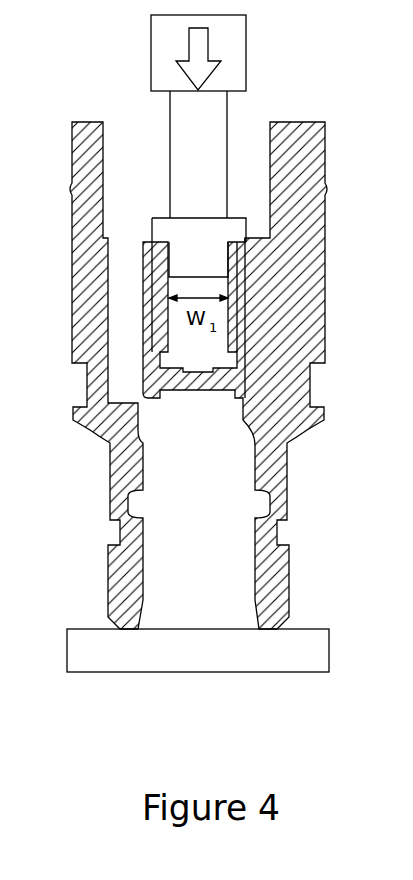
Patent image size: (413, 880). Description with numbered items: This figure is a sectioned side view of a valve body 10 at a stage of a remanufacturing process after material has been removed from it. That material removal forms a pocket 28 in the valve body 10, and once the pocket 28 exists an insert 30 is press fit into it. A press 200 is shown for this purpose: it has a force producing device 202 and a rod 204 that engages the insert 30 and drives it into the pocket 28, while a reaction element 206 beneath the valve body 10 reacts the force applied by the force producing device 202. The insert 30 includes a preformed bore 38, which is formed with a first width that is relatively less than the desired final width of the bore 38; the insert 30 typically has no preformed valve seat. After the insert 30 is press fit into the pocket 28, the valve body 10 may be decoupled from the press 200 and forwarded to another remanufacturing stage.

The valve body 10 is at (300, 355).
The pocket 28 is at (245, 265).
The insert 30 is at (242, 307).
The bore 38 is at (165, 255).
The press 200 is at (258, 89).
The force producing device 202 is at (232, 36).
The rod 204 is at (176, 107).
The reaction element 206 is at (318, 655).